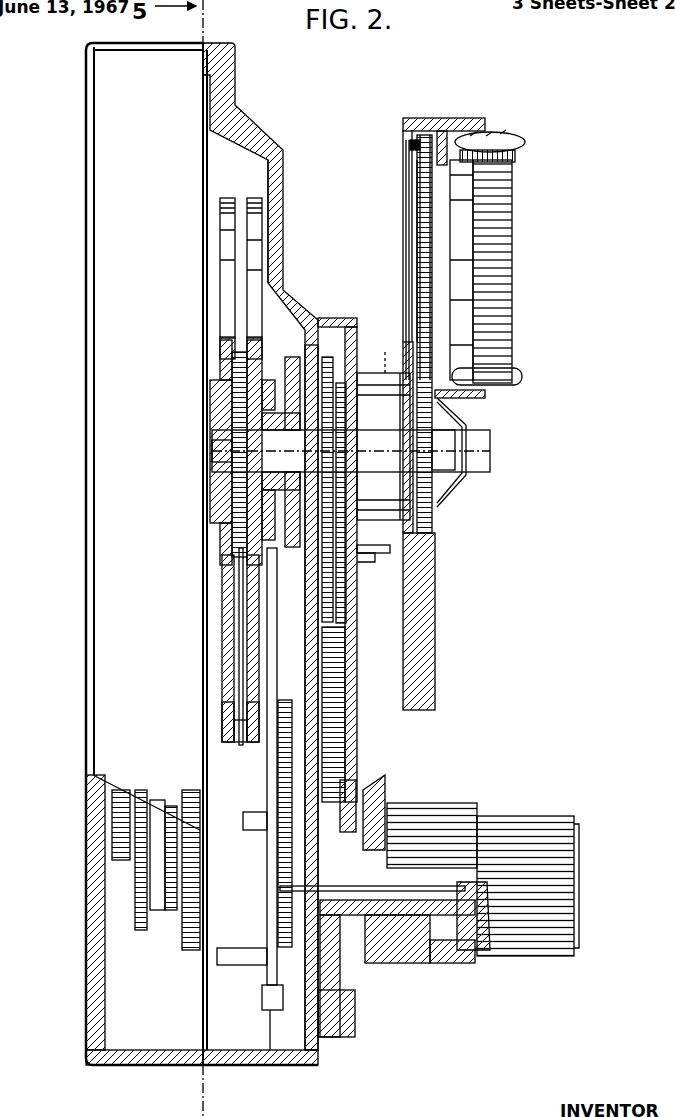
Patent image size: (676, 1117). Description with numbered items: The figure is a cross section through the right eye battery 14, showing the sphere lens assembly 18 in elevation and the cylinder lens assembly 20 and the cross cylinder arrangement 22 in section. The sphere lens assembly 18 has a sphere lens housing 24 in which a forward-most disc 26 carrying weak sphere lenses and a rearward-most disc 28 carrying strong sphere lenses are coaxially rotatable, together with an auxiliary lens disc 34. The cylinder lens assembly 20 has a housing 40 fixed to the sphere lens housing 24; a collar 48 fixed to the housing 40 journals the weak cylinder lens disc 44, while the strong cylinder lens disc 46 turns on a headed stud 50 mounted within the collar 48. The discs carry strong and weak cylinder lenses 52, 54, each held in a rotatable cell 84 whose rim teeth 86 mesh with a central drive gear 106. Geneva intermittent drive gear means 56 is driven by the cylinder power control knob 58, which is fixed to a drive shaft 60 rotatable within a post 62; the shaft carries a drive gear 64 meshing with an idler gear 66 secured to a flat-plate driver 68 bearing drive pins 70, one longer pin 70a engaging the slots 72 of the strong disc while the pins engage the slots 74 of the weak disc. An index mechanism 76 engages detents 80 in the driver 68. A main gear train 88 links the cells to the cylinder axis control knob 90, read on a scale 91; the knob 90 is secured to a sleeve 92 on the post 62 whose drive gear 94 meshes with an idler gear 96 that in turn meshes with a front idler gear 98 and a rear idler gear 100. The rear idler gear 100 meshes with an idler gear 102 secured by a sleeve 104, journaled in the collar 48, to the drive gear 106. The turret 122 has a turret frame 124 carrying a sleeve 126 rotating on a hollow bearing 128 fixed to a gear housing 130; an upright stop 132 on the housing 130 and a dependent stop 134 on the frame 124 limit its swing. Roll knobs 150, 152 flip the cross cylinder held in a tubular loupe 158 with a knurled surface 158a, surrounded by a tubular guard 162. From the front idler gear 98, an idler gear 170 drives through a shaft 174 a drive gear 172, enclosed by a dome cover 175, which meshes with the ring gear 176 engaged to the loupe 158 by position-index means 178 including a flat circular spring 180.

The rotary tool assembly 14 is at (52, 170).
The sphere lens assembly 18 is at (150, 936).
The cylinder lens assembly 20 is at (252, 188).
The cross cylinder arrangement 22 is at (495, 112).
The sphere lens housing 24 is at (108, 230).
The forward-most lens disc 26 is at (185, 950).
The rearward-most lens disc 28 is at (135, 930).
The auxiliary lens disc 34 is at (112, 835).
The housing 40 is at (258, 124).
The weak cylinder lens disc 44 is at (252, 745).
The strong cylinder lens disc 46 is at (222, 735).
The collar 48 is at (292, 357).
The headed stud 50 is at (212, 455).
The strong cylinder lenses 52 is at (228, 645).
The weak cylinder lenses 54 is at (250, 620).
The Geneva intermittent drive gear means 56 is at (278, 860).
The cylinder power control knob 58 is at (565, 952).
The drive shaft 60 is at (437, 888).
The post 62 is at (392, 930).
The drive gear 64 is at (278, 920).
The idler gear 66 is at (285, 775).
The flat-plate driver 68 is at (266, 968).
The drive pins 70 is at (246, 830).
The longer drive pin 70a is at (225, 966).
The slots of strong cylinder lens disc 72 is at (220, 283).
The slots of weak cylinder lens disc 74 is at (258, 275).
The index mechanism 76 is at (270, 1050).
The detents 80 is at (267, 848).
The cell 84 is at (240, 582).
The cell teeth 86 is at (245, 748).
The main gear train 88 is at (232, 362).
The cylinder axis control knob 90 is at (460, 805).
The scale 91 is at (360, 1030).
The sleeve 92 is at (380, 935).
The drive gear 94 is at (338, 1030).
The idler gear 96 is at (356, 790).
The front idler gear 98 is at (352, 620).
The rear idler gear 100 is at (306, 618).
The idler gear 102 is at (327, 357).
The sleeve 104 is at (220, 418).
The drive gear 106 is at (247, 390).
The turret 122 is at (440, 628).
The turret frame 124 is at (435, 670).
The sleeve 126 is at (440, 413).
The hollow bearing 128 is at (365, 373).
The gear housing 130 is at (345, 712).
The upright stop 132 is at (378, 562).
The dependent stop 134 is at (388, 356).
The roll knob 150 is at (506, 145).
The roll knob 152 is at (522, 380).
The tubular loupe 158 is at (495, 262).
The knurled surface 158a is at (505, 216).
The tubular guard 162 is at (457, 118).
The idler gear 170 is at (342, 383).
The drive gear 172 is at (432, 530).
The shaft 174 is at (446, 462).
The dome cover 175 is at (447, 492).
The cross cylinder ring gear 176 is at (423, 135).
The position-index means 178 is at (406, 205).
The flat circular spring 180 is at (410, 146).